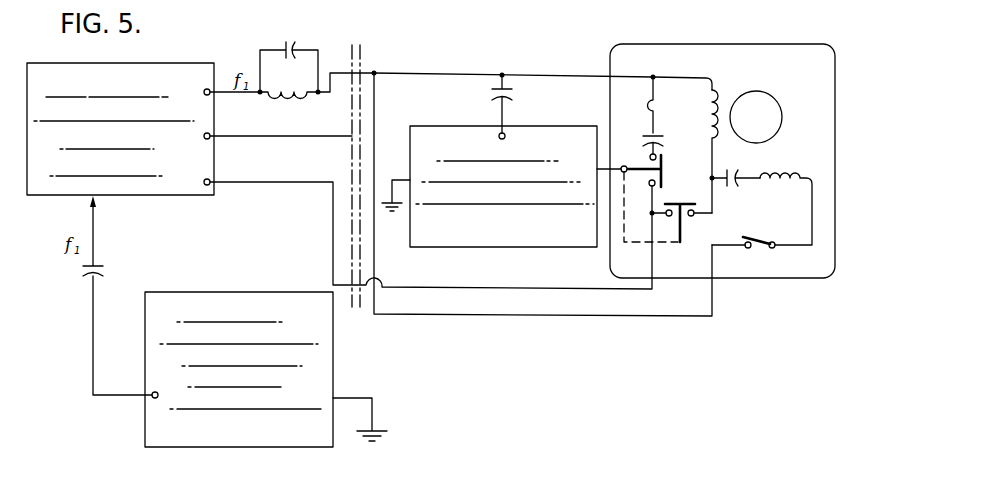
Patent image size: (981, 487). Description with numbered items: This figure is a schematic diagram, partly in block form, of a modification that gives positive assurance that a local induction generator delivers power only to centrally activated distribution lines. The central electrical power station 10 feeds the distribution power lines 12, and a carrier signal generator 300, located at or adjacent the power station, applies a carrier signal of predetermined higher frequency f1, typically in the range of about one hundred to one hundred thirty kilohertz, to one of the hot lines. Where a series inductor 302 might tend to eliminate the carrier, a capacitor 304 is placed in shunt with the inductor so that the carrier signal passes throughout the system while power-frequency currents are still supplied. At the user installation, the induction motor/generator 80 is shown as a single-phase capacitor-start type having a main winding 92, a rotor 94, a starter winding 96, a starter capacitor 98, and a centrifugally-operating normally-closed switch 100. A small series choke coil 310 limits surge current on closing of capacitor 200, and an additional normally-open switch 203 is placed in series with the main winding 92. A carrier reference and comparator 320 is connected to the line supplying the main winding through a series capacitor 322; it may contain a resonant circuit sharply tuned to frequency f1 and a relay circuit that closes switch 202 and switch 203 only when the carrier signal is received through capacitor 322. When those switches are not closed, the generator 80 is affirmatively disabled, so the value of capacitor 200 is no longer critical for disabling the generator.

The central electrical power station 10 is at (62, 197).
The distribution power lines 12 is at (222, 82).
The induction motor/generator 80 is at (830, 49).
The main winding 92 is at (719, 88).
The rotor 94 is at (770, 105).
The starter winding 96 is at (794, 186).
The starter capacitor 98 is at (742, 177).
The centrifugally-operating normally-closed switch 100 is at (752, 249).
The capacitor 200 is at (664, 141).
The switch 202 is at (665, 181).
The normally-open switch 203 is at (698, 223).
The carrier signal generator 300 is at (333, 368).
The series inductor 302 is at (287, 100).
The capacitor 304 is at (289, 44).
The series choke coil 310 is at (676, 104).
The carrier reference and comparator 320 is at (424, 125).
The series capacitor 322 is at (512, 94).